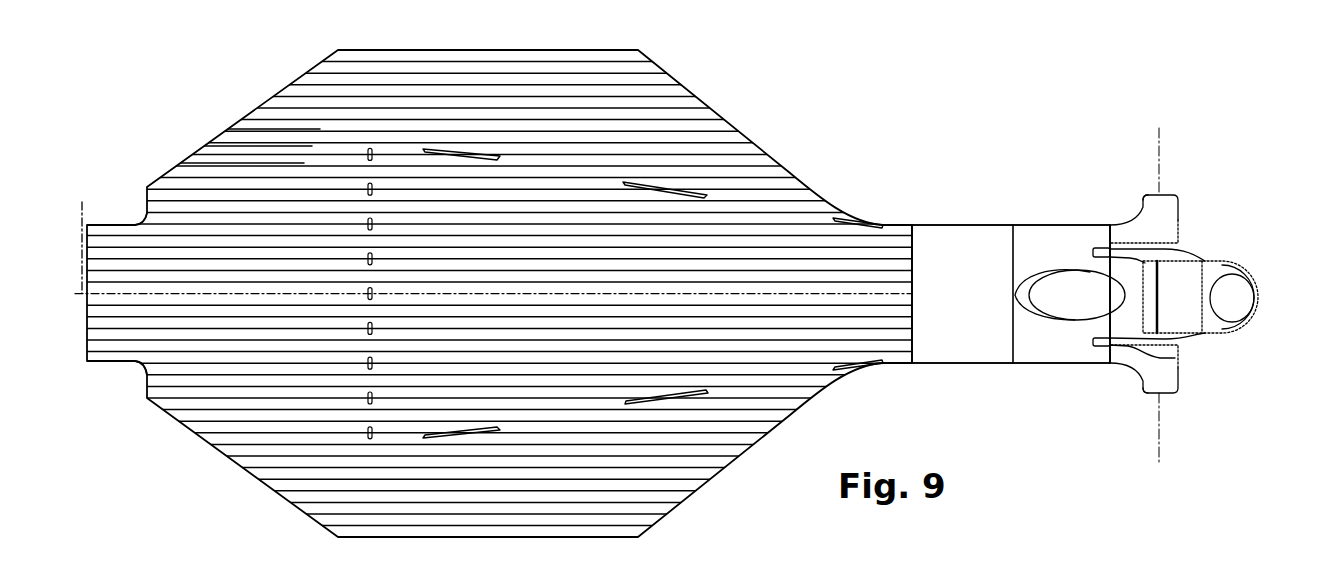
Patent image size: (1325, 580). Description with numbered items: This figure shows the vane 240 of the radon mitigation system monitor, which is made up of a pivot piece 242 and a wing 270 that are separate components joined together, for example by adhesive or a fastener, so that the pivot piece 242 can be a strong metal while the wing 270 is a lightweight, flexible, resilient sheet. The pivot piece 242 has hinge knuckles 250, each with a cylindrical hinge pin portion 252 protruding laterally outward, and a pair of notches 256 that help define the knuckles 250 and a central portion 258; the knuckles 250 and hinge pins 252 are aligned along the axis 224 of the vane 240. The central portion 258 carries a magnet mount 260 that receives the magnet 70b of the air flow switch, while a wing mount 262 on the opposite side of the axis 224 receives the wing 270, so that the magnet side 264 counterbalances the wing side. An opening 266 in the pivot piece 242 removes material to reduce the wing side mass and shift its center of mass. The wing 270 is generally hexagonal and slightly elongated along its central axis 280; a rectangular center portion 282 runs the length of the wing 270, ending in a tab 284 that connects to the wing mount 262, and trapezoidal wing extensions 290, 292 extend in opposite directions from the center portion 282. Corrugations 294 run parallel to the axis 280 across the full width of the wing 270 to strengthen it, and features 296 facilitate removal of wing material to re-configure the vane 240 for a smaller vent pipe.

The magnet 70b is at (1233, 298).
The axis 224 is at (1150, 130).
The vane 240 is at (814, 133).
The pivot piece 242 is at (958, 260).
The hinge knuckles 250 is at (1168, 222).
The hinge pin portion 252 is at (1148, 195).
The notches 256 is at (1160, 255).
The central portion 258 is at (1157, 292).
The magnet mount 260 is at (1258, 312).
The wing mount 262 is at (953, 330).
The magnet side 264 is at (1230, 574).
The opening 266 is at (1063, 298).
The wing 270 is at (463, 93).
The central axis 280 is at (493, 239).
The center portion 282 is at (405, 188).
The tab 284 is at (133, 253).
The wing extension 290 is at (550, 78).
The wing extension 292 is at (528, 518).
The corrugations 294 is at (298, 163).
The features 296 is at (653, 187).